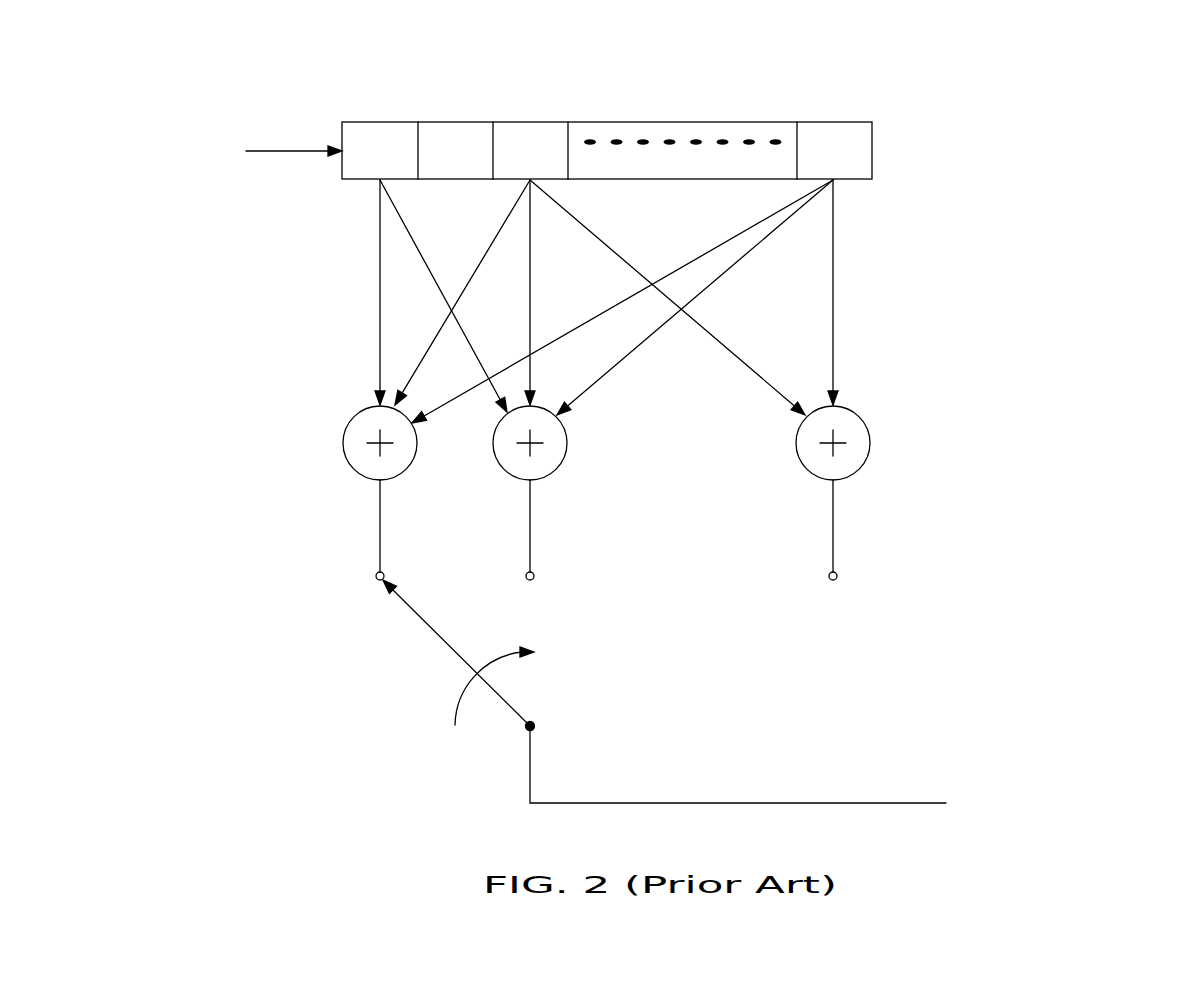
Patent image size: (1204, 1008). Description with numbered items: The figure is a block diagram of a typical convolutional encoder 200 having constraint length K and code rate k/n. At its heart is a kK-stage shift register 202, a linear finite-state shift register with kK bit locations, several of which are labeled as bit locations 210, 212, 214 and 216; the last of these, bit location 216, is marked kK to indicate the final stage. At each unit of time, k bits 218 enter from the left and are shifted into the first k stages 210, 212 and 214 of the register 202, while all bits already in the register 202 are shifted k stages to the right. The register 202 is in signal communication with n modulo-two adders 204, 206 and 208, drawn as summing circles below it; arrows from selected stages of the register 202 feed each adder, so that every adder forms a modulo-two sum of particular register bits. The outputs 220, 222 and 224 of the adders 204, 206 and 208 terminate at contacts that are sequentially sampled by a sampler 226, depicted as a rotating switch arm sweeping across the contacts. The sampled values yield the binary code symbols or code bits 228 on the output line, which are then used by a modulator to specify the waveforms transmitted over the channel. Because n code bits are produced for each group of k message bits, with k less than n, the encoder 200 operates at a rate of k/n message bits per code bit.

The convolutional encoder 200 is at (1052, 152).
The kK-stage shift register 202 is at (884, 130).
The modulo-2 adder 204 is at (343, 435).
The modulo-2 adder 206 is at (493, 438).
The modulo-2 adder 208 is at (870, 437).
The bit location 210 is at (380, 122).
The bit location 212 is at (456, 122).
The bit location 214 is at (532, 122).
The bit location 216 is at (834, 122).
The k bits 218 is at (285, 151).
The adder output 220 is at (380, 527).
The adder output 222 is at (530, 527).
The adder output 224 is at (833, 527).
The sampler 226 is at (432, 630).
The code symbols 228 is at (833, 803).